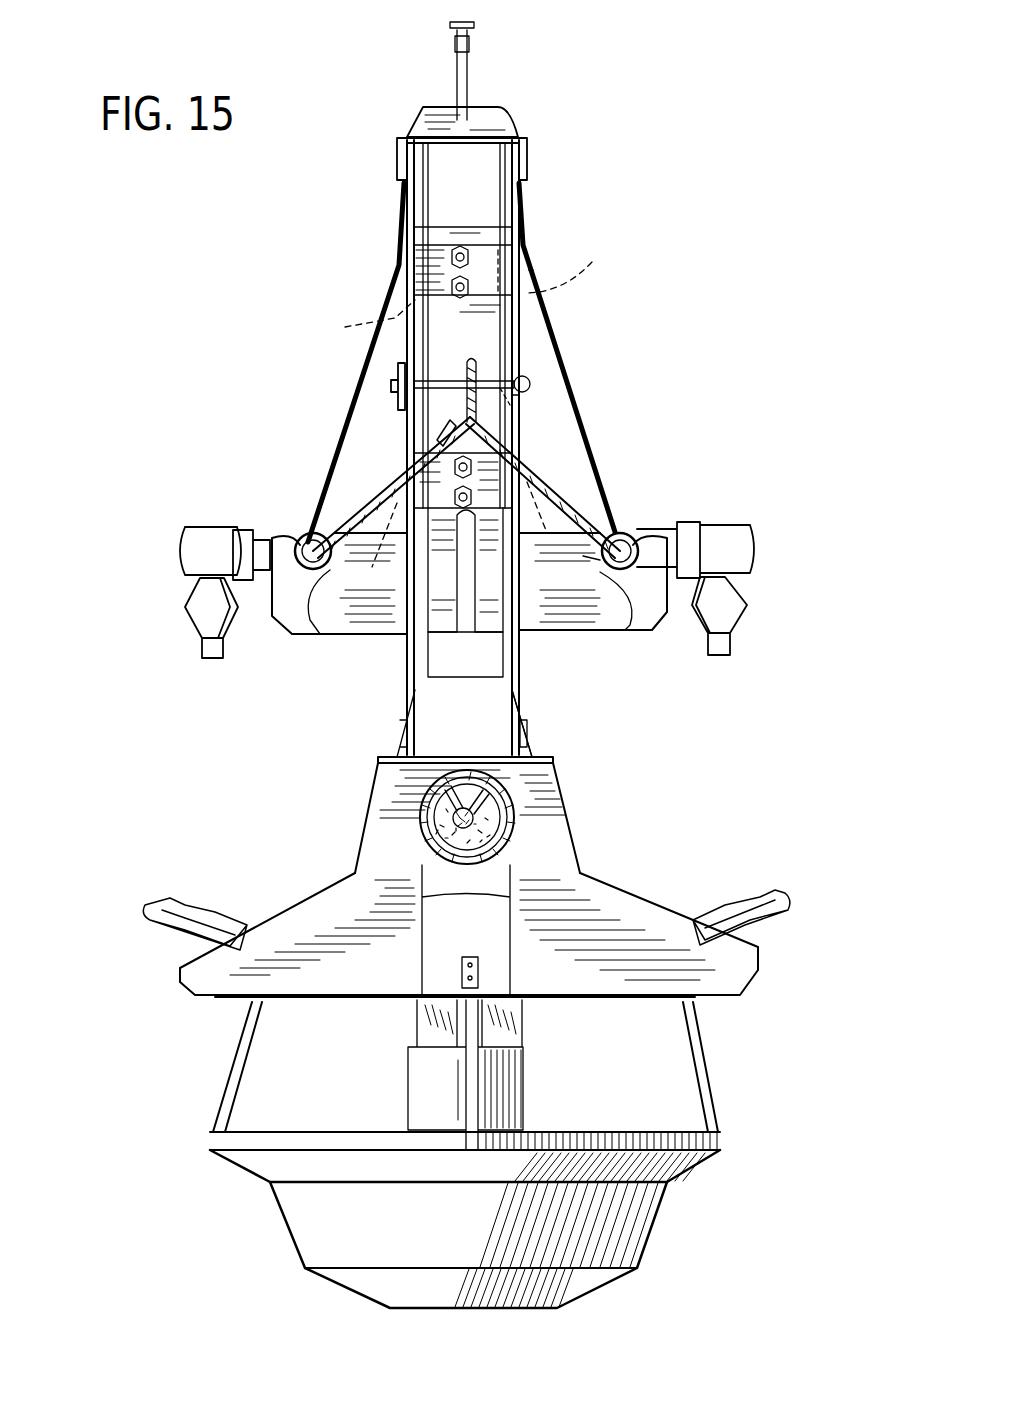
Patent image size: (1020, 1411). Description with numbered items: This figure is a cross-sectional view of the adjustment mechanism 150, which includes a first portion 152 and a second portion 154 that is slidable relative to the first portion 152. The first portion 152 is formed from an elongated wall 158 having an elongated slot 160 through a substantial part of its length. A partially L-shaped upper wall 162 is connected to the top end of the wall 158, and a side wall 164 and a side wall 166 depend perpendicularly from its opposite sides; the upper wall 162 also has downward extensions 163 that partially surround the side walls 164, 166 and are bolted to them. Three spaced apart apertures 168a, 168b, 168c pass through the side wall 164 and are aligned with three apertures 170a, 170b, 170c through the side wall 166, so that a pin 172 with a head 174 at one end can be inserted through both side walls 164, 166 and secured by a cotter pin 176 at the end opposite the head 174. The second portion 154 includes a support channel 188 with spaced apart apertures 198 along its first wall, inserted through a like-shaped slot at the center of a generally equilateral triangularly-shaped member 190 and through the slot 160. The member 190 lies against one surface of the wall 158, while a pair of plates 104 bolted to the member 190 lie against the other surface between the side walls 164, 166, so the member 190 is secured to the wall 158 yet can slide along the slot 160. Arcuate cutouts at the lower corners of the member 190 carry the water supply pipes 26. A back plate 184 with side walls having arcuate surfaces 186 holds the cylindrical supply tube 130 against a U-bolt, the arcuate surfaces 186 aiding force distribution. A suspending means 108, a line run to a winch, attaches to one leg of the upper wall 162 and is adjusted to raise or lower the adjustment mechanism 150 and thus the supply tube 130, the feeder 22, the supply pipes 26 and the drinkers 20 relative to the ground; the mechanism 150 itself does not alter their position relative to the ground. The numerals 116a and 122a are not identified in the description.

The drinkers 20 is at (185, 625).
The feeder 22 is at (758, 1064).
The water supply pipes 26 is at (292, 632).
The plates 104 is at (432, 275).
The suspending means 108 is at (463, 82).
The base ring 116a is at (672, 1165).
The clip 122a is at (652, 895).
The supply tube 130 is at (540, 815).
The adjustment mechanism 150 is at (555, 240).
The first portion 152 is at (528, 641).
The second portion 154 is at (568, 355).
The elongated wall 158 is at (522, 726).
The elongated slot 160 is at (440, 648).
The upper wall 162 is at (493, 130).
The downward extensions 163 is at (527, 160).
The side wall 164 is at (404, 205).
The side wall 166 is at (527, 203).
The aperture 168a is at (350, 318).
The aperture 168b is at (397, 385).
The aperture 168c is at (406, 586).
The aperture 170a is at (584, 262).
The aperture 170b is at (516, 385).
The aperture 170c is at (564, 549).
The pin 172 is at (523, 402).
The head 174 is at (531, 385).
The cotter pin 176 is at (440, 428).
The back plate 184 is at (390, 775).
The arcuate surface 186 is at (434, 818).
The support channel 188 is at (478, 362).
The triangularly-shaped member 190 is at (570, 453).
The apertures 198 is at (462, 378).